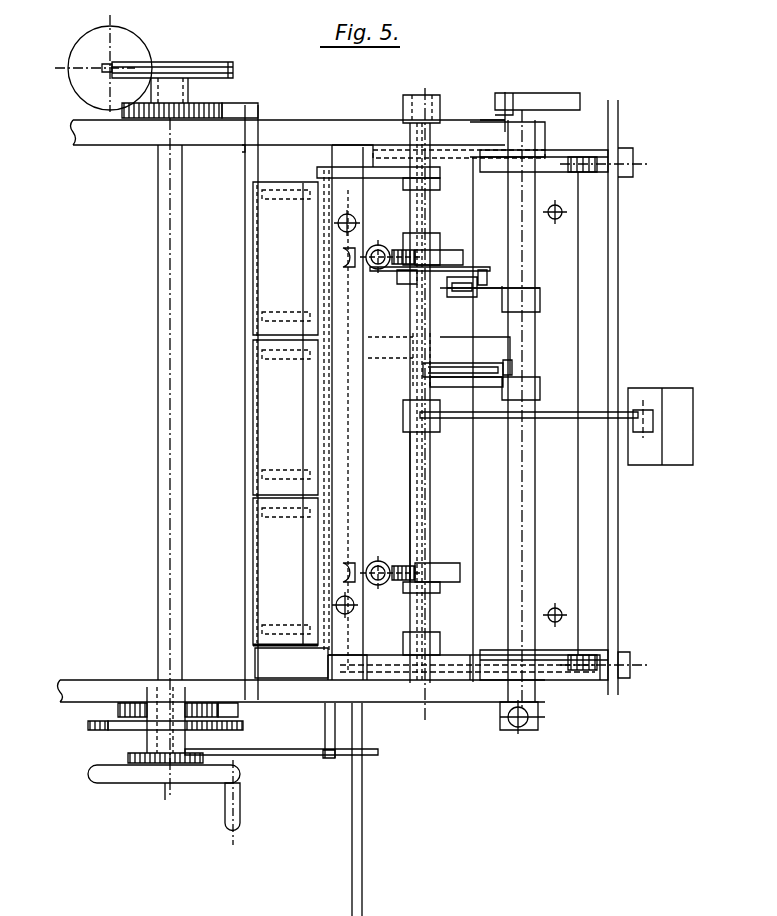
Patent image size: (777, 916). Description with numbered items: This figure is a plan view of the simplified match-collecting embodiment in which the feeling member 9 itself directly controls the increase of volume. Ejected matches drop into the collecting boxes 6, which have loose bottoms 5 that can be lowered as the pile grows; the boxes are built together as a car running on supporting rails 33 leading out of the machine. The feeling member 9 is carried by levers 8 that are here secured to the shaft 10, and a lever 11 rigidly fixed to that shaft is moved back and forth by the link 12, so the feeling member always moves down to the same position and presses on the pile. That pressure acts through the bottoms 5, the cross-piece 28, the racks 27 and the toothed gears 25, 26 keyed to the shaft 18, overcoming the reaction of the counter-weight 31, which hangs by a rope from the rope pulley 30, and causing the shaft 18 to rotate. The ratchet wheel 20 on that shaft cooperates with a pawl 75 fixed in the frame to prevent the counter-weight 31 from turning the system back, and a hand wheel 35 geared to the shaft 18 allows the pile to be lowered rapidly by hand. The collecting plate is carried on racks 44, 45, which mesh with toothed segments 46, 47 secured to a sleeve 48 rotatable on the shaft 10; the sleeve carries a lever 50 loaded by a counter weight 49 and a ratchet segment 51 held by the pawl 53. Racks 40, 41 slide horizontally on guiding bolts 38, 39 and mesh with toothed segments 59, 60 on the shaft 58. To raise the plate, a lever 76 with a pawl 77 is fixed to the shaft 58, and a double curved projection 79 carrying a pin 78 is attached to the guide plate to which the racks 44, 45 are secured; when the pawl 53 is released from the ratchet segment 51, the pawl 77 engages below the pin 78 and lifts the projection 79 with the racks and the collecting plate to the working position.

The loose bottom 5 is at (268, 272).
The collecting box 6 is at (291, 663).
The lever 8 is at (358, 172).
The feeling member 9 is at (302, 236).
The shaft 10 is at (431, 198).
The lever 11 is at (455, 120).
The link 12 is at (546, 100).
The shaft 18 is at (178, 380).
The ratchet wheel 20 is at (88, 727).
The toothed gear 25 is at (125, 703).
The toothed gear 26 is at (208, 118).
The rack 27 is at (225, 108).
The cross-piece 28 is at (258, 112).
The rope pulley 30 is at (200, 60).
The counter-weight 31 is at (128, 46).
The supporting rail 33 is at (362, 842).
The hand wheel 35 is at (240, 781).
The guiding bolt 38 is at (606, 662).
The guiding bolt 39 is at (605, 170).
The rack 40 is at (590, 675).
The rack 41 is at (593, 160).
The rack 44 is at (379, 562).
The rack 45 is at (379, 245).
The toothed segment 46 is at (446, 563).
The toothed segment 47 is at (450, 252).
The sleeve 48 is at (433, 508).
The counter weight 49 is at (692, 404).
The lever 50 is at (553, 406).
The ratchet segment 51 is at (396, 285).
The pawl 53 is at (476, 270).
The shaft 58 is at (530, 518).
The toothed segment 59 is at (548, 690).
The toothed segment 60 is at (556, 158).
The pawl 75 is at (120, 736).
The lever 76 is at (485, 388).
The pawl 77 is at (483, 362).
The pin 78 is at (513, 368).
The double curved projection 79 is at (510, 345).